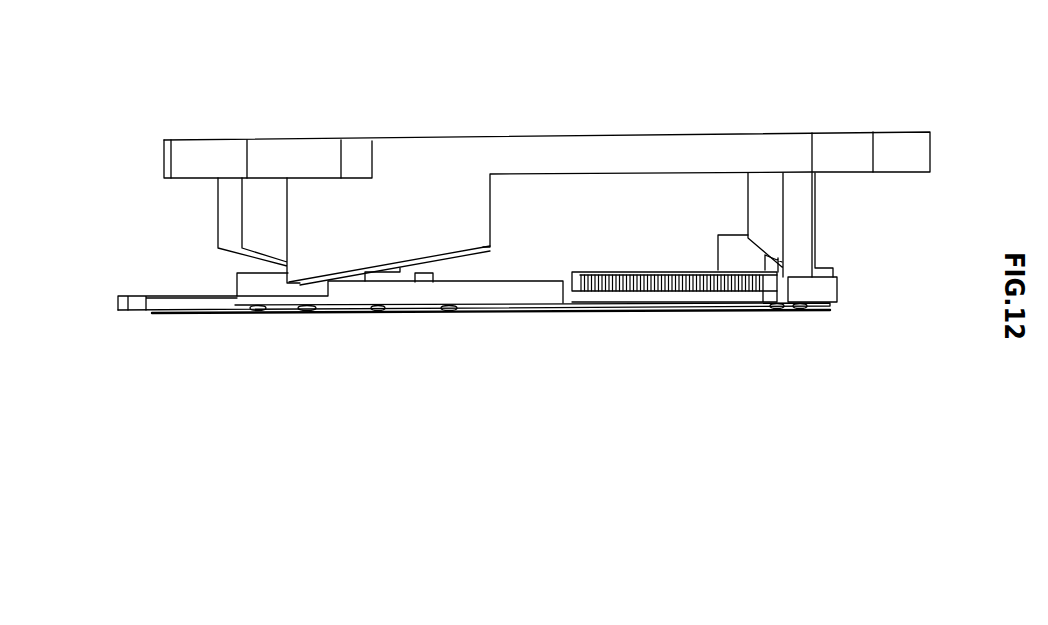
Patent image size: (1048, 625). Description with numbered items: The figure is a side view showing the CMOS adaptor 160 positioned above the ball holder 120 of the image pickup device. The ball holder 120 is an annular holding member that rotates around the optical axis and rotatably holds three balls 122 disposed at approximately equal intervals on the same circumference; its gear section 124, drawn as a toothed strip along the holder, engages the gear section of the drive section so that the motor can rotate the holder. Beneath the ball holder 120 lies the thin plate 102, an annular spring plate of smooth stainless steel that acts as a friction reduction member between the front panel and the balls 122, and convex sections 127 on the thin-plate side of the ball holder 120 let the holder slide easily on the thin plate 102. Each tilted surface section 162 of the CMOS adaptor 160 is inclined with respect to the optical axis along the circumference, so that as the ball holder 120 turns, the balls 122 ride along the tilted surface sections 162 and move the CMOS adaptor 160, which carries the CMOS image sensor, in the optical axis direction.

The CMOS adaptor 160 is at (615, 134).
The tilted surface section 162 is at (226, 217).
The ball holder 120 is at (516, 301).
The gear section 124 is at (663, 297).
The thin plate 102 is at (182, 314).
The convex section 127 is at (257, 314).
The ball 122 is at (310, 314).